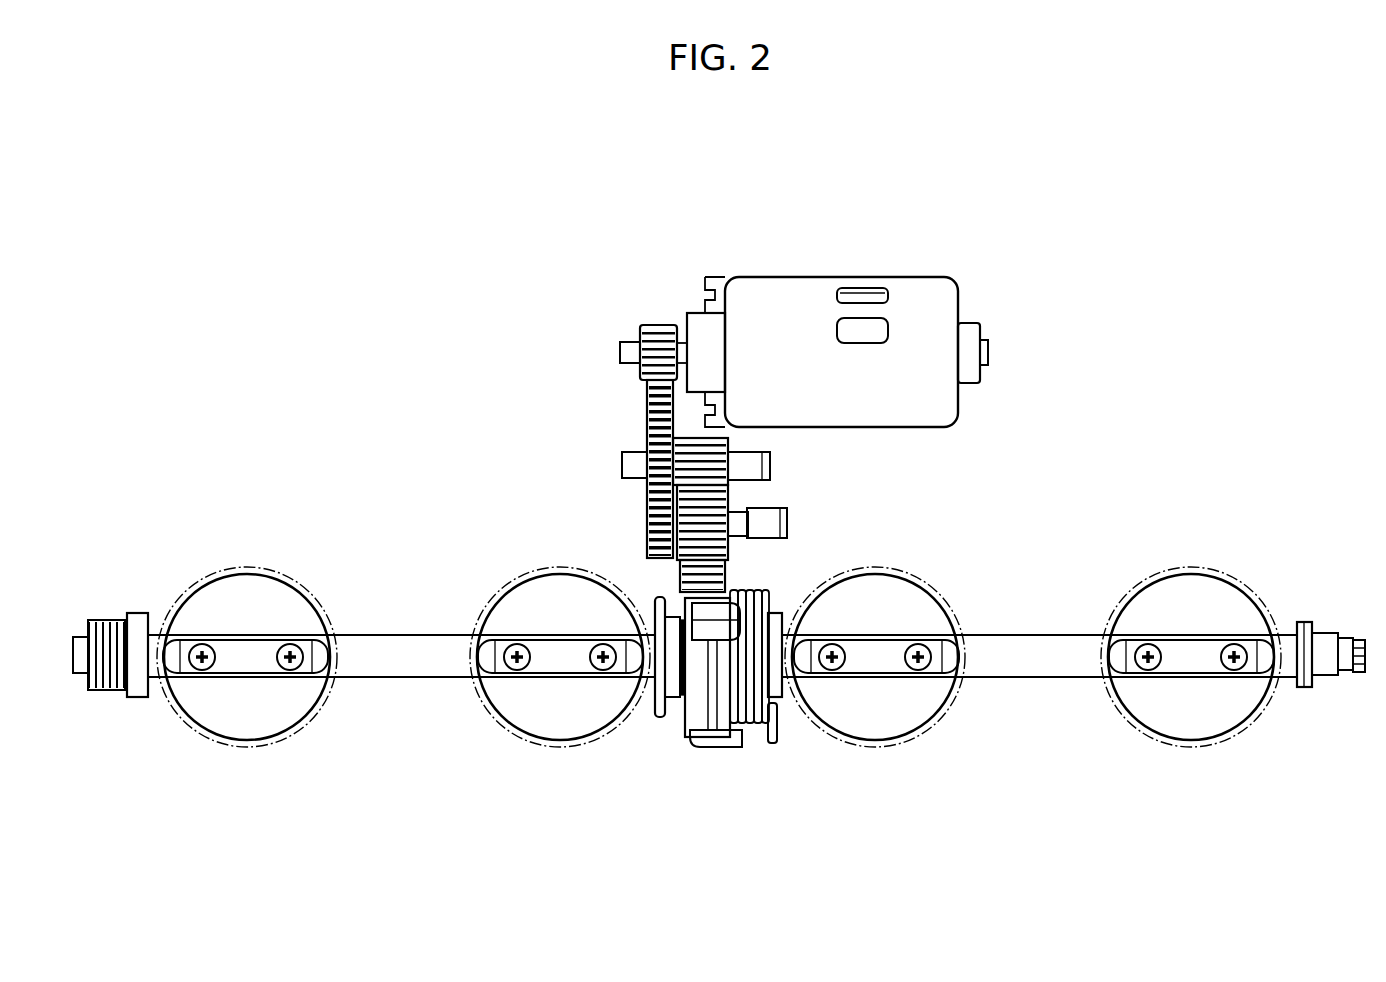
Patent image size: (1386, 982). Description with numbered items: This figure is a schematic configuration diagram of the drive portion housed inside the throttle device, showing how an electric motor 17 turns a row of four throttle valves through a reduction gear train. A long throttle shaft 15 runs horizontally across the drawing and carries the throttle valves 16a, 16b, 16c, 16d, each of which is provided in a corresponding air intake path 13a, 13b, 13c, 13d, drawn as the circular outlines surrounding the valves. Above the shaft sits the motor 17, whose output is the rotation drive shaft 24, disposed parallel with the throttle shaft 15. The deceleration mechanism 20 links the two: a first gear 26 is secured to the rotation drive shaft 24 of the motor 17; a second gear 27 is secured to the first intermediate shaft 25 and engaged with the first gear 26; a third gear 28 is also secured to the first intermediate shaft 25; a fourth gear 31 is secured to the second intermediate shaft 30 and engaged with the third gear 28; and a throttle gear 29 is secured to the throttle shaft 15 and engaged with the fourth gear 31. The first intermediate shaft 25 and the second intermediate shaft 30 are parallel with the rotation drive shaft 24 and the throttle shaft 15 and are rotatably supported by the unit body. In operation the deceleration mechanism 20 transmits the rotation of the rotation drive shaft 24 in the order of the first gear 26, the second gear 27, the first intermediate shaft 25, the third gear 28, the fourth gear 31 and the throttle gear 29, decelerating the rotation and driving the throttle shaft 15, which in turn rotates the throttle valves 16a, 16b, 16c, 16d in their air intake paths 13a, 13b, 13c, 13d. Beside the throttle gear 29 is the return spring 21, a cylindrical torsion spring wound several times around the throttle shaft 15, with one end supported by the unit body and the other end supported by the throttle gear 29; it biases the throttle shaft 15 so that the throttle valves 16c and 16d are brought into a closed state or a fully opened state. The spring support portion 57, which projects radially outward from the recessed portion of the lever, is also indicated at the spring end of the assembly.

The deceleration mechanism 20 is at (645, 247).
The motor 17 is at (916, 283).
The first gear 26 is at (645, 322).
The rotation drive shaft 24 is at (617, 351).
The second gear 27 is at (655, 408).
The third gear 28 is at (715, 447).
The first intermediate shaft 25 is at (772, 466).
The second intermediate shaft 30 is at (788, 525).
The fourth gear 31 is at (725, 550).
The throttle gear 29 is at (678, 578).
The return spring 21 is at (730, 685).
The spring support portion 57 is at (753, 740).
The throttle shaft 15 is at (1320, 620).
The throttle valve 16a is at (232, 708).
The throttle valve 16b is at (545, 708).
The throttle valve 16c is at (860, 708).
The throttle valve 16d is at (1176, 708).
The air intake path 13a is at (280, 735).
The air intake path 13b is at (593, 735).
The air intake path 13c is at (908, 735).
The air intake path 13d is at (1224, 735).